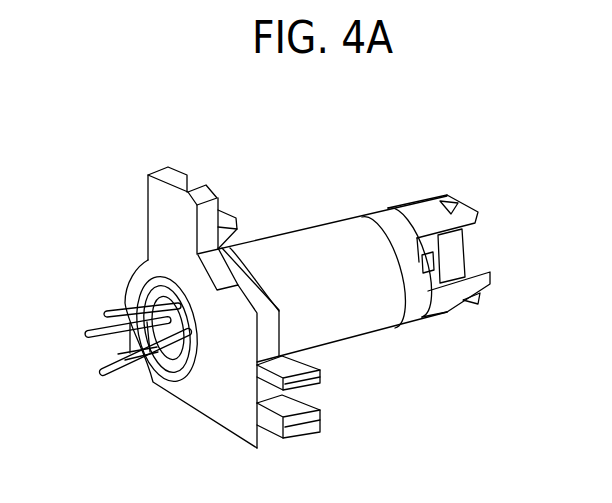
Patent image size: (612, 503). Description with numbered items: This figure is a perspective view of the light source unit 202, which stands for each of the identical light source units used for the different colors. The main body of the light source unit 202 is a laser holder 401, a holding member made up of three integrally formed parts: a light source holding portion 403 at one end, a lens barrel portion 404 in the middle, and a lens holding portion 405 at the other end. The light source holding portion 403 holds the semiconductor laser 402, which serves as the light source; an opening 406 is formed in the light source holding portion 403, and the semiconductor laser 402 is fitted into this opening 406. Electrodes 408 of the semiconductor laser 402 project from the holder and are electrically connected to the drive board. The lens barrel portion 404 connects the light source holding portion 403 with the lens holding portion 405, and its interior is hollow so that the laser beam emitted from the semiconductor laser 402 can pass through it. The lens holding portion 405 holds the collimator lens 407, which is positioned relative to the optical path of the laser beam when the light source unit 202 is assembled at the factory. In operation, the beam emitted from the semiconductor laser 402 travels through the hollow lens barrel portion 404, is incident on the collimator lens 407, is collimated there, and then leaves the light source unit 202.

The light source unit 202 is at (478, 198).
The laser holder 401 is at (340, 345).
The semiconductor laser 402 is at (168, 372).
The light source holding portion 403 is at (157, 212).
The lens barrel portion 404 is at (322, 238).
The lens holding portion 405 is at (422, 212).
The opening 406 is at (187, 373).
The collimator lens 407 is at (460, 253).
The electrodes 408 is at (88, 328).